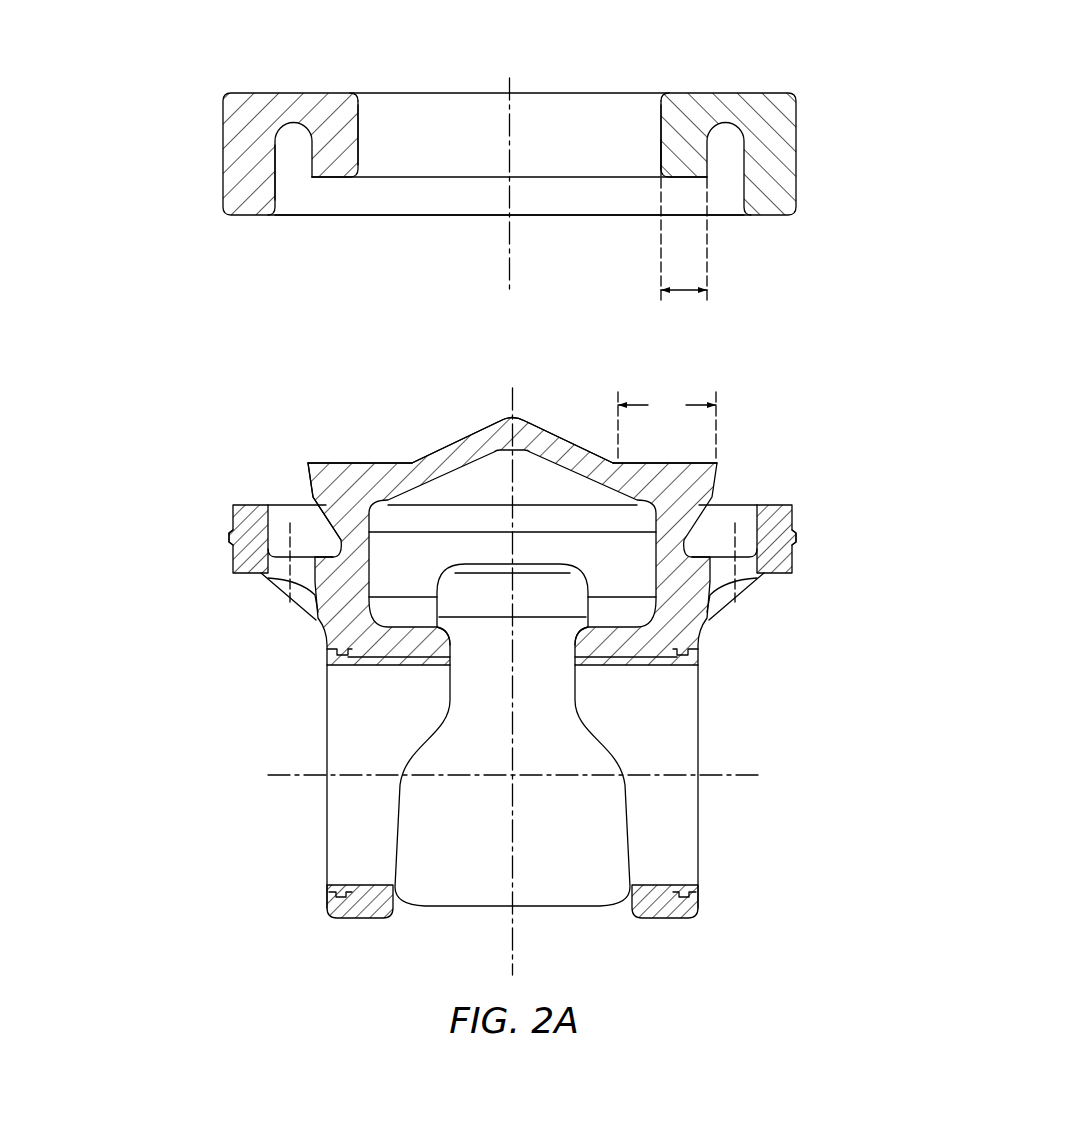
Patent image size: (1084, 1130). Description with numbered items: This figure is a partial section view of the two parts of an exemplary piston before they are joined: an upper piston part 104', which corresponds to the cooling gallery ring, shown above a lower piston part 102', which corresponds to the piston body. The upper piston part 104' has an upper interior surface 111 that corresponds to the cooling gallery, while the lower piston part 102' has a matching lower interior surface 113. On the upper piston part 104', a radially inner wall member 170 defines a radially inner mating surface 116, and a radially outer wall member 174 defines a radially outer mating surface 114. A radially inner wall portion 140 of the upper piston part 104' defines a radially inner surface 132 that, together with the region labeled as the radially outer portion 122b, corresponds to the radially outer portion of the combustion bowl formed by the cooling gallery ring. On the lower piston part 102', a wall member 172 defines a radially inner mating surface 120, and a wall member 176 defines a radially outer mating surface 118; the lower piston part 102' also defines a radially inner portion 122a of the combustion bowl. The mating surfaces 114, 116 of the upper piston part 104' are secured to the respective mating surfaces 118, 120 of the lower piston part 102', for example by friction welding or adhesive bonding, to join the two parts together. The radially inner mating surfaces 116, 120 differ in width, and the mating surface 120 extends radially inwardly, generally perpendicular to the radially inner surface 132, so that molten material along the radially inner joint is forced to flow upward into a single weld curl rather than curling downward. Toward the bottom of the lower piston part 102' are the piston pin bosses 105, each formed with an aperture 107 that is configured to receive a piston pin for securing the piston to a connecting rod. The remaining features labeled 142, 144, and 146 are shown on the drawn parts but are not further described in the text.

The upper piston part 104' is at (479, 174).
The wall member 170 is at (335, 128).
The radially inner wall portion 140 is at (336, 138).
The outer rim 142 is at (245, 183).
The upper interior surface 111 is at (277, 158).
The mating surface 116 is at (331, 178).
The mating surface 114 is at (252, 216).
The wall member 174 is at (778, 175).
The radially outer portion of the combustion bowl 122b is at (661, 128).
The radially inner surface 132 is at (639, 109).
The lower piston part 102' is at (482, 670).
The radially inner portion of the combustion bowl 122a is at (585, 445).
The mating surface 120 is at (318, 460).
The wall member 172 is at (325, 483).
The pocket 144 is at (338, 512).
The lower interior surface 113 is at (734, 506).
The mating surface 118 is at (243, 504).
The ring lip 146 is at (248, 535).
The wall member 176 is at (771, 535).
The aperture 107 is at (388, 667).
The piston pin boss 105 is at (353, 900).